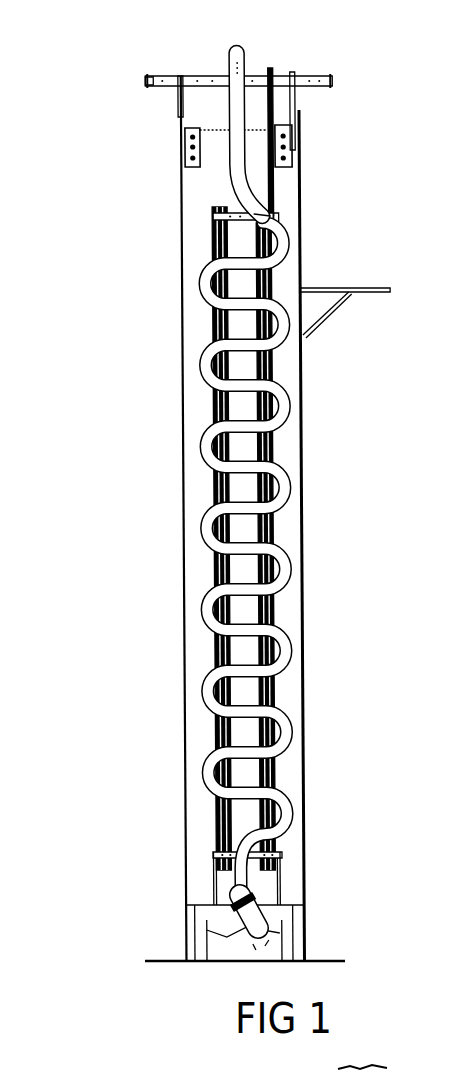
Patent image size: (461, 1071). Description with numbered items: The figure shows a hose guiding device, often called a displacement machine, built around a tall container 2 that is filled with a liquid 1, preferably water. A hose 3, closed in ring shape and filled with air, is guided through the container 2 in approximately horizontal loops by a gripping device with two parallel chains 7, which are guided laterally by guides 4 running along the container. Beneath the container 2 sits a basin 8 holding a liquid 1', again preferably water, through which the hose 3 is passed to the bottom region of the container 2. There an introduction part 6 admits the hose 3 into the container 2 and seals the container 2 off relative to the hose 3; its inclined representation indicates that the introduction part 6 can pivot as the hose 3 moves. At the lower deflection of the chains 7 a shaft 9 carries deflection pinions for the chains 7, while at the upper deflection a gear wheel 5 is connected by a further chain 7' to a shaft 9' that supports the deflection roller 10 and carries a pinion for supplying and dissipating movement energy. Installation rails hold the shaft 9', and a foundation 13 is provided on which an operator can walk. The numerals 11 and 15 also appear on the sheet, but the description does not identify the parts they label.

The liquid 1 is at (180, 516).
The liquid 1' is at (304, 936).
The container 2 is at (302, 522).
The hose 3 is at (237, 55).
The guides 4 is at (210, 225).
The gear wheel 5 is at (148, 78).
The introduction part 6 is at (267, 903).
The chains 7 is at (297, 553).
The further chain 7' is at (332, 145).
The basin 8 is at (223, 933).
The shaft 9 is at (302, 858).
The shaft 9' is at (238, 47).
The deflection roller 10 is at (247, 68).
The ground 11 is at (387, 1068).
The foundation 13 is at (358, 288).
The clamp plates 15 is at (270, 155).